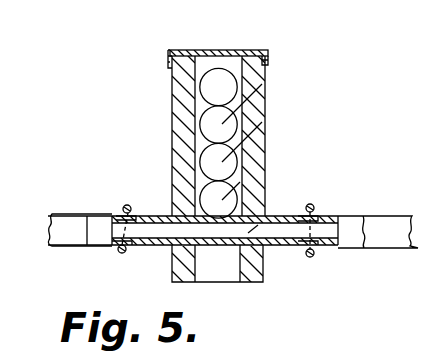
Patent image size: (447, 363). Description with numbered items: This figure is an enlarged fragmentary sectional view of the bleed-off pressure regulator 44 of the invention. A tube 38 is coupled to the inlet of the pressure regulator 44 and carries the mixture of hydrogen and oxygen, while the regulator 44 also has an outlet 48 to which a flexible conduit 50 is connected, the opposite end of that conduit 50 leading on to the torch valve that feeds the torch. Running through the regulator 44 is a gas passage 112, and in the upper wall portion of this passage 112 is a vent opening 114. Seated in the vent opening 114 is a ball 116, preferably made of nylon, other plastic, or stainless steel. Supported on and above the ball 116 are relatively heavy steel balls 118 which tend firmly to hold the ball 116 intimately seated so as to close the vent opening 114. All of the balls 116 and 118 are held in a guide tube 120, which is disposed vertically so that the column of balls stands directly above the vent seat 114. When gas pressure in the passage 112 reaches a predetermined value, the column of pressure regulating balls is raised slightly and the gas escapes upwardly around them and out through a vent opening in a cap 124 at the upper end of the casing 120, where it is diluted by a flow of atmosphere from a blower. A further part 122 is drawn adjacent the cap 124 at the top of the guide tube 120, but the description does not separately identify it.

The tube 38 is at (85, 203).
The bleed-off pressure regulator 44 is at (178, 111).
The outlet 48 is at (322, 216).
The flexible conduit 50 is at (384, 222).
The gas passage 112 is at (265, 216).
The vent opening 114 is at (224, 247).
The ball 116 is at (273, 132).
The steel balls 118 is at (218, 87).
The guide tube 120 is at (172, 83).
The cap lip 122 is at (220, 51).
The cap 124 is at (196, 50).